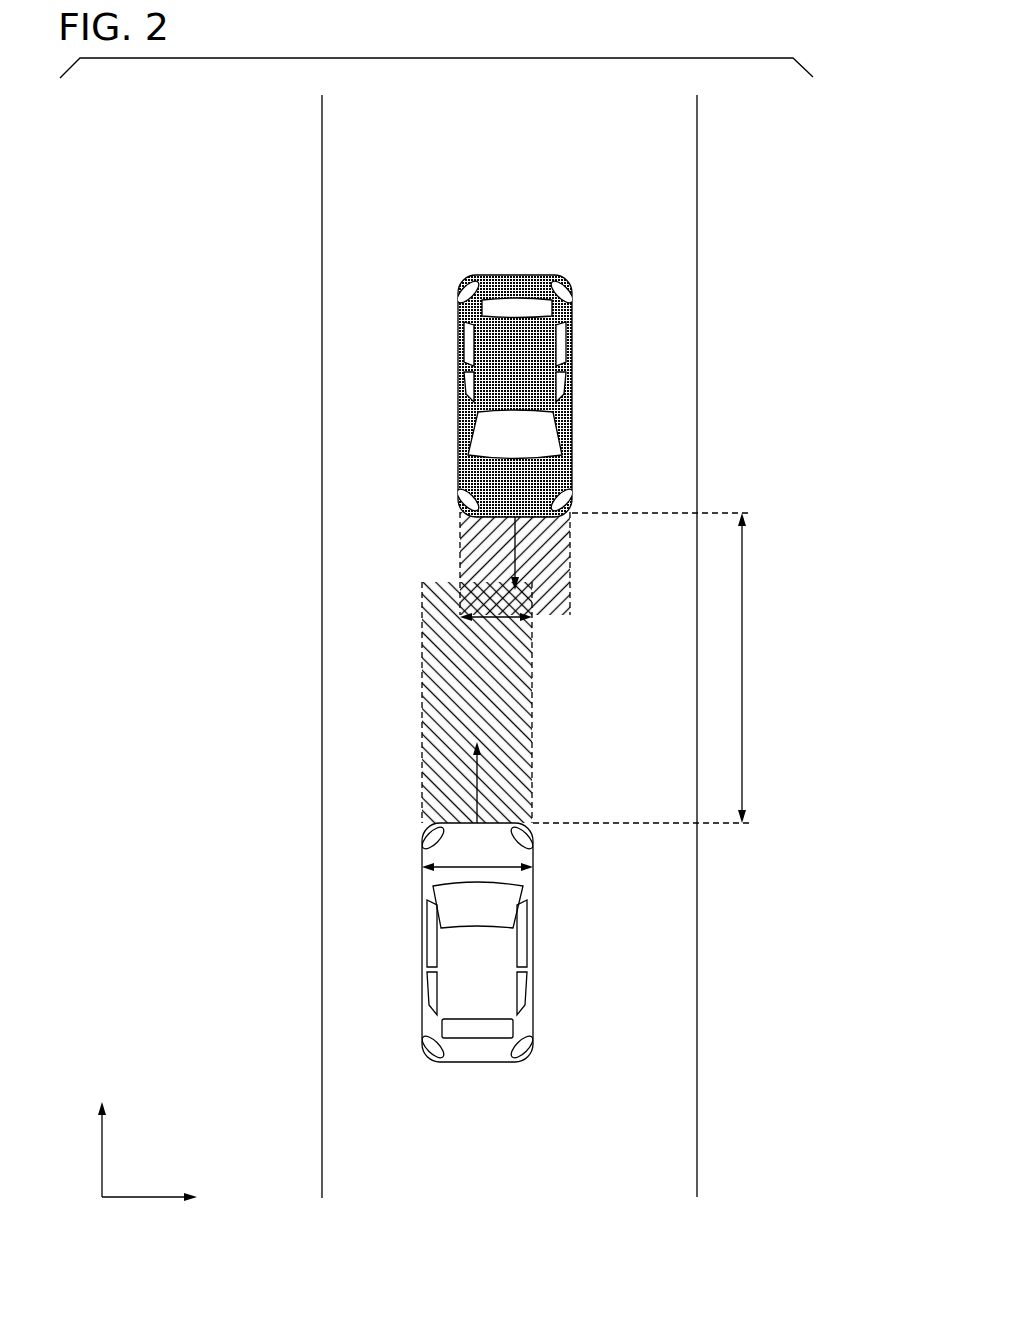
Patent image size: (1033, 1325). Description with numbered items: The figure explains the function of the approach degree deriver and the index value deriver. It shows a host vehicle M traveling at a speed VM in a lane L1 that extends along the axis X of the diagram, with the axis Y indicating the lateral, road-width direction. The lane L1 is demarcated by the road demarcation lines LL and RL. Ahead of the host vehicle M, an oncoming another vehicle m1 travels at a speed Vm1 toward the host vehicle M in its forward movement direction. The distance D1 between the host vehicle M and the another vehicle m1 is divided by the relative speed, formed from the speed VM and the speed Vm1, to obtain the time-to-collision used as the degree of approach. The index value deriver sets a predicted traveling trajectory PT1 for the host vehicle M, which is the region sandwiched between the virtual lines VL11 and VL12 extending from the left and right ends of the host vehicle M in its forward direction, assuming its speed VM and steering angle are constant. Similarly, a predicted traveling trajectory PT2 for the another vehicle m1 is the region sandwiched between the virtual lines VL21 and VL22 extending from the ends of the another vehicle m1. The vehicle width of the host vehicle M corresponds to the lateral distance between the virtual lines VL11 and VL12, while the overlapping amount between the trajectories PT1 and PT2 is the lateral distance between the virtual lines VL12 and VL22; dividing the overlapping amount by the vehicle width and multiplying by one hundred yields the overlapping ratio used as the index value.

The another vehicle m1 is at (574, 393).
The host vehicle M is at (535, 941).
The predicted traveling trajectory of the host vehicle PT1 is at (435, 660).
The predicted traveling trajectory of the another vehicle PT2 is at (473, 530).
The virtual line VL11 is at (422, 736).
The virtual line VL12 is at (532, 734).
The virtual line VL21 is at (570, 582).
The virtual line VL22 is at (460, 576).
The speed of the another vehicle Vm1 is at (517, 538).
The speed of the host vehicle VM is at (479, 792).
The distance D1 is at (657, 668).
The road demarcation line LL is at (322, 1118).
The road demarcation line RL is at (697, 1119).
The lane L1 is at (523, 1196).
The axis X is at (104, 1132).
The axis Y is at (162, 1196).